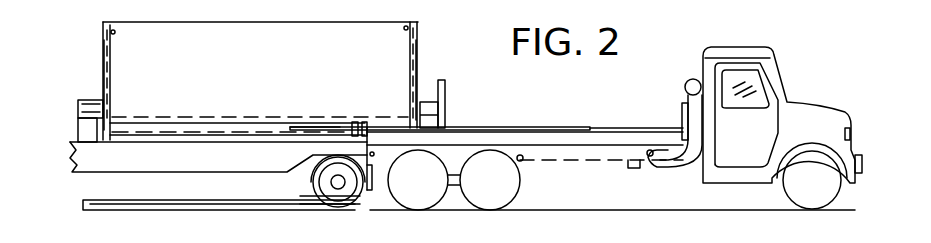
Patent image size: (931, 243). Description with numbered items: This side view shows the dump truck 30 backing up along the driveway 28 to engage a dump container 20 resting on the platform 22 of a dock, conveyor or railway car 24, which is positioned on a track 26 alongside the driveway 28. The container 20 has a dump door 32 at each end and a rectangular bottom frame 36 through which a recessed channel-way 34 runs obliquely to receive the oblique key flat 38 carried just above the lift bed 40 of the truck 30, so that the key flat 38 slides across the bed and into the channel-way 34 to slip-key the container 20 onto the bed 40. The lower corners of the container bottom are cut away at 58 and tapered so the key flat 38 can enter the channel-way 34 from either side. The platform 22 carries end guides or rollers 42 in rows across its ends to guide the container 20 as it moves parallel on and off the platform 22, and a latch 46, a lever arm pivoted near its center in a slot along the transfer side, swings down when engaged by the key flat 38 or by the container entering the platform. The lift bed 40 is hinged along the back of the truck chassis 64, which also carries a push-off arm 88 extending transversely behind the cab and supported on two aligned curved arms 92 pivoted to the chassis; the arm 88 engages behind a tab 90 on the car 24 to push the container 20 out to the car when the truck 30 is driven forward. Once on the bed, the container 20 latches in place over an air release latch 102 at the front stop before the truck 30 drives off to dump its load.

The dump container 20 is at (103, 30).
The platform 22 is at (230, 152).
The railway car 24 is at (98, 172).
The track 26 is at (90, 212).
The driveway 28 is at (592, 206).
The dump truck 30 is at (780, 47).
The dump door 32 is at (103, 52).
The channel-way 34 is at (300, 125).
The bottom frame 36 is at (138, 125).
The key flat 38 is at (545, 125).
The lift bed 40 is at (639, 128).
The end guides or rollers 42 is at (78, 110).
The latch 46 is at (358, 122).
The cut-away corner 58 is at (398, 123).
The truck chassis 64 is at (675, 176).
The push-off arm 88 is at (691, 79).
The tab 90 is at (445, 80).
The curved arms 92 is at (80, 126).
The air release latch 102 is at (673, 124).